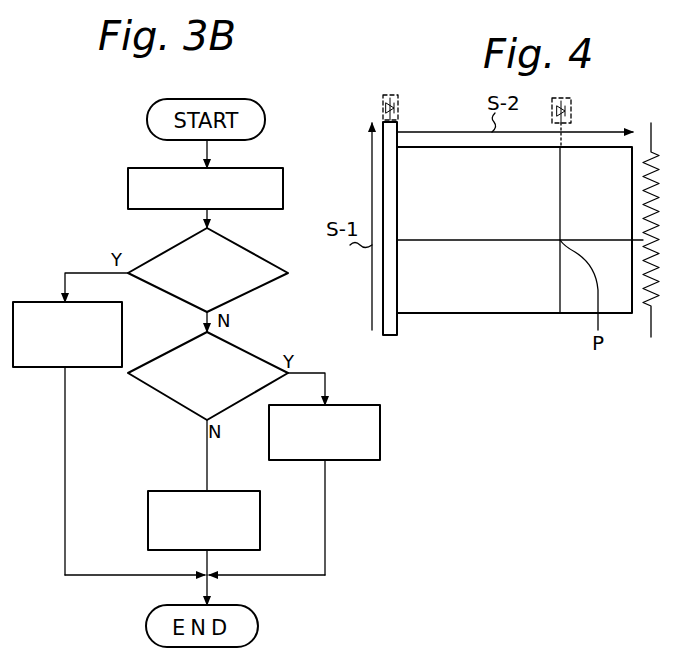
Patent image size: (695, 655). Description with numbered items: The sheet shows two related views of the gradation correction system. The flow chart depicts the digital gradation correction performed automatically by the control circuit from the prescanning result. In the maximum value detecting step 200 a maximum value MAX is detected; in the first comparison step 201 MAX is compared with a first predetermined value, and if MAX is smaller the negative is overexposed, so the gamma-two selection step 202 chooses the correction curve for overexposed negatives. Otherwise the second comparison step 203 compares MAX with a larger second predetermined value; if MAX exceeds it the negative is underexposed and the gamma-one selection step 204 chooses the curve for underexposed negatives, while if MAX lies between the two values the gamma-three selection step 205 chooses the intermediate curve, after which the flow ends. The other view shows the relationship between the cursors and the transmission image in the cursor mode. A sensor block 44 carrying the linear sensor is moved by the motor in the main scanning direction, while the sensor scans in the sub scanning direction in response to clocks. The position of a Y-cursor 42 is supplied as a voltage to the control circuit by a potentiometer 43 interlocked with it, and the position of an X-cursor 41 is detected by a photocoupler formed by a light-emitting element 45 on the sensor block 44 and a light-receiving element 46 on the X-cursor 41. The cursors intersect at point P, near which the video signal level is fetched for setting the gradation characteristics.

In FIG. 3B, the maximum value detecting step 200 is at (269, 168).
In FIG. 3B, the first comparison step 201 is at (261, 257).
In FIG. 3B, the gamma-2 selection step 202 is at (86, 303).
In FIG. 3B, the second comparison step 203 is at (255, 355).
In FIG. 3B, the gamma-1 selection step 204 is at (354, 402).
In FIG. 3B, the gamma-3 selection step 205 is at (227, 490).
In FIG. 4, the X-cursor 41 is at (560, 285).
In FIG. 4, the Y-cursor 42 is at (480, 240).
In FIG. 4, the potentiometer 43 is at (655, 175).
In FIG. 4, the sensor block 44 is at (388, 172).
In FIG. 4, the light-emitting element 45 is at (391, 95).
In FIG. 4, the light-receiving element 46 is at (565, 98).